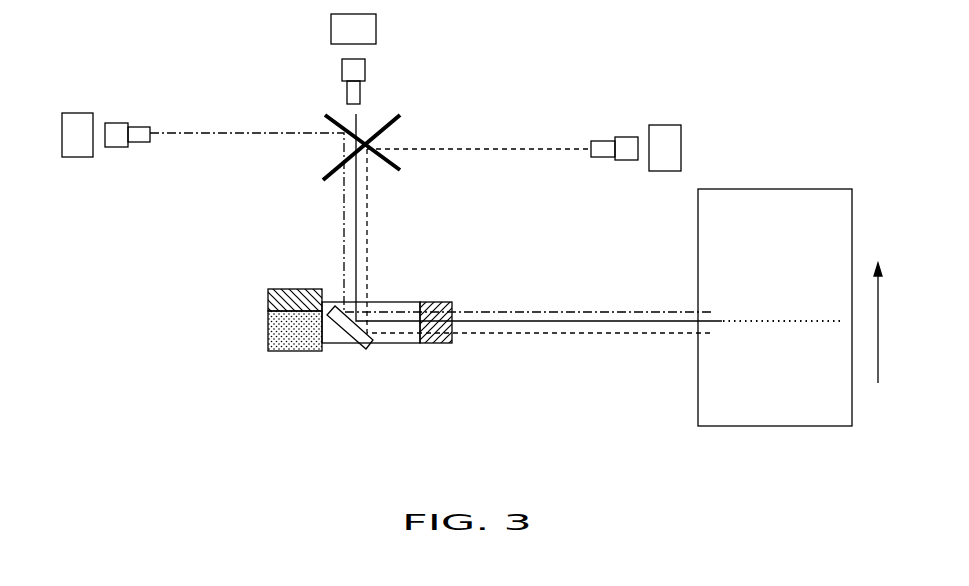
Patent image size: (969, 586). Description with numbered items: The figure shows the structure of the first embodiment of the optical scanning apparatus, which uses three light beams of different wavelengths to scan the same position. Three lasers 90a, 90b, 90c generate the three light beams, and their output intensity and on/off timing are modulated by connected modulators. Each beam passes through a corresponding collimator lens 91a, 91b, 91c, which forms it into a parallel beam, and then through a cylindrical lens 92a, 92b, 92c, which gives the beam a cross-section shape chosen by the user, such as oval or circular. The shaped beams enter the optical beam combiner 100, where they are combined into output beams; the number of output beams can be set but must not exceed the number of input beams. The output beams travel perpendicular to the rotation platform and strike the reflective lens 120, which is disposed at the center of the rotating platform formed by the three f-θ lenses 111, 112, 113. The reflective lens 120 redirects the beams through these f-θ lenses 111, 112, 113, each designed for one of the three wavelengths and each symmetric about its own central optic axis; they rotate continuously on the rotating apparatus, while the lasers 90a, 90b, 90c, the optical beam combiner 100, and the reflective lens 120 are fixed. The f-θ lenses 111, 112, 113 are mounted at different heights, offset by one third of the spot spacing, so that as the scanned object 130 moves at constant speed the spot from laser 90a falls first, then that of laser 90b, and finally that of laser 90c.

The laser 90a is at (663, 160).
The collimator lens 91a is at (627, 150).
The cylindrical lens 92a is at (601, 152).
The laser 90b is at (368, 27).
The collimator lens 91b is at (359, 69).
The cylindrical lens 92b is at (360, 92).
The laser 90c is at (74, 150).
The collimator lens 91c is at (118, 139).
The cylindrical lens 92c is at (142, 137).
The optical beam combiner 100 is at (333, 170).
The f-θ lens 111 is at (437, 300).
The f-θ lens 112 is at (277, 290).
The f-θ lens 113 is at (280, 338).
The reflective lens 120 is at (366, 348).
The scanned object 130 is at (788, 213).